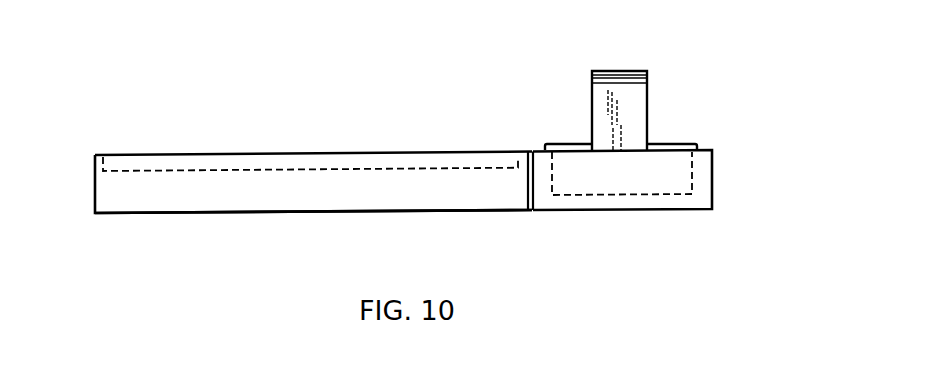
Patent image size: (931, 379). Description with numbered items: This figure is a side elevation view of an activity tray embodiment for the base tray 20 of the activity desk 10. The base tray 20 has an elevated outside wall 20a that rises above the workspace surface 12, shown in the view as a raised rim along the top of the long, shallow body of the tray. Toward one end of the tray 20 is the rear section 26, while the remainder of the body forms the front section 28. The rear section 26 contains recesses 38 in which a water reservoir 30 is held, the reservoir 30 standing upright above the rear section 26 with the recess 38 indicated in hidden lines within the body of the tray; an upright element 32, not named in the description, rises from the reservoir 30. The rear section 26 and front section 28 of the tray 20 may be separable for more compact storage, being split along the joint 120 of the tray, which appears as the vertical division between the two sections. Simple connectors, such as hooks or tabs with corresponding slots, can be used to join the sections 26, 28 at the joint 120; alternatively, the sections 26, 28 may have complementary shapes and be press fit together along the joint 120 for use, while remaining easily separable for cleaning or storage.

The activity desk 10 is at (481, 94).
The workspace surface 12 is at (195, 170).
The base tray 20 is at (95, 182).
The elevated outside wall 20a is at (396, 152).
The rear section 26 is at (716, 165).
The front section 28 is at (155, 218).
The water reservoir 30 is at (689, 145).
The cylindrical post 32 is at (646, 104).
The recesses 38 is at (692, 190).
The joint 120 is at (574, 206).